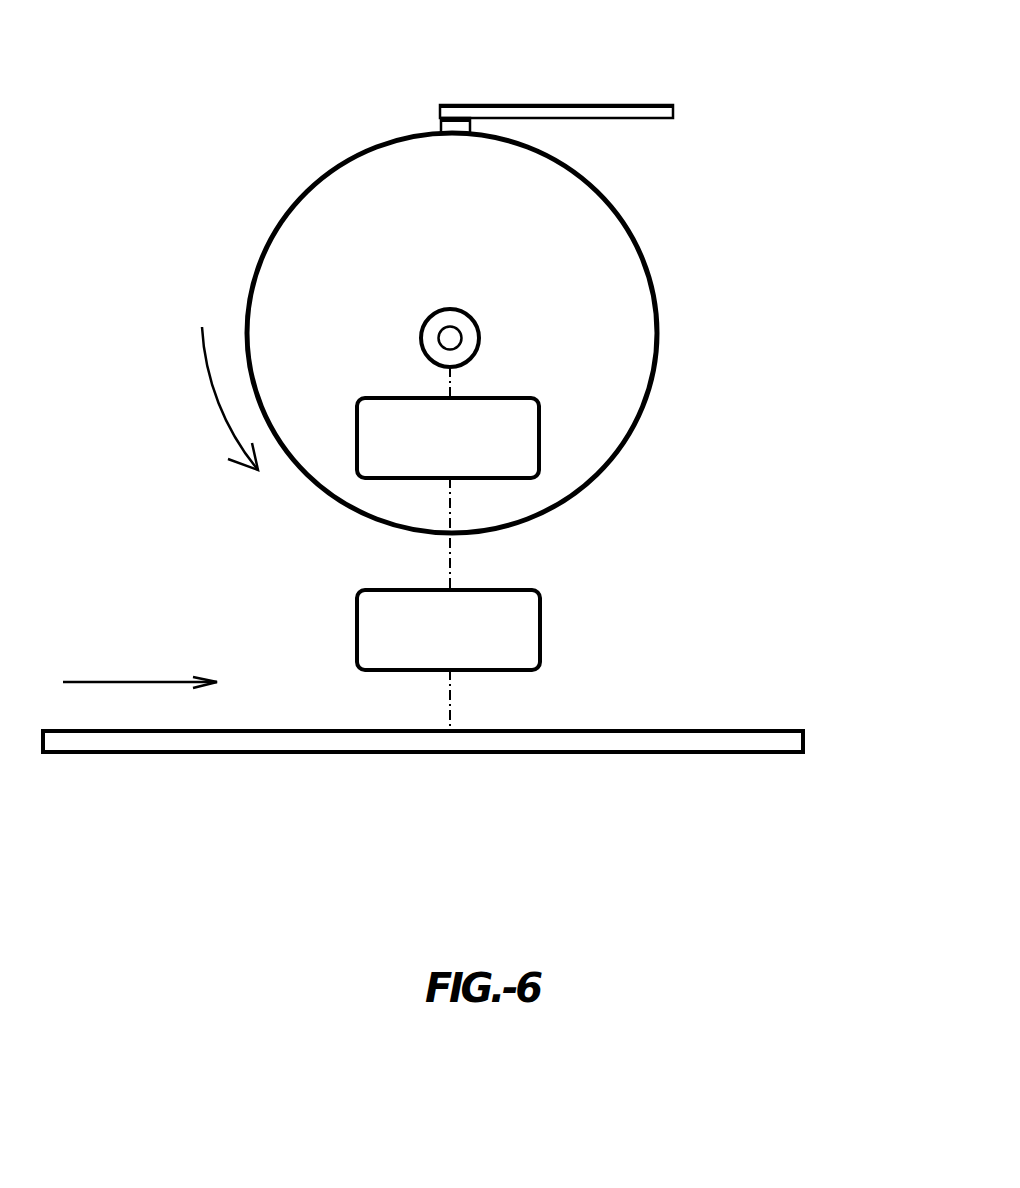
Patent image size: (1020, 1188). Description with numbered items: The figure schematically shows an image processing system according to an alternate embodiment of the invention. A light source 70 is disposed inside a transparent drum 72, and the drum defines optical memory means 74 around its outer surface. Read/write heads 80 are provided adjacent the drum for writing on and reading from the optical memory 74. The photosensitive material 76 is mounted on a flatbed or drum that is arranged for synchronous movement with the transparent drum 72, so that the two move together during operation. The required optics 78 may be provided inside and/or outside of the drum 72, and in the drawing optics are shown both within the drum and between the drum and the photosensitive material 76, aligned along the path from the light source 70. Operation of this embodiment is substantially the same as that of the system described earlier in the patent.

The light source 70 is at (480, 332).
The transparent drum 72 is at (413, 236).
The optical memory means 74 is at (260, 262).
The photosensitive material 76 is at (302, 727).
The optics 78 is at (540, 438).
The read/write heads 80 is at (450, 105).